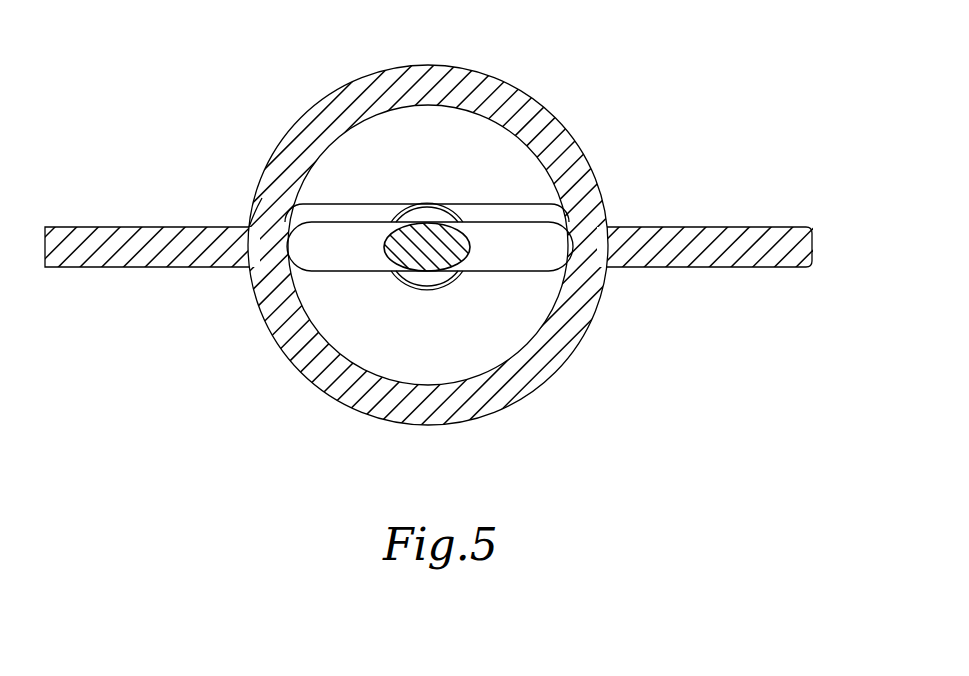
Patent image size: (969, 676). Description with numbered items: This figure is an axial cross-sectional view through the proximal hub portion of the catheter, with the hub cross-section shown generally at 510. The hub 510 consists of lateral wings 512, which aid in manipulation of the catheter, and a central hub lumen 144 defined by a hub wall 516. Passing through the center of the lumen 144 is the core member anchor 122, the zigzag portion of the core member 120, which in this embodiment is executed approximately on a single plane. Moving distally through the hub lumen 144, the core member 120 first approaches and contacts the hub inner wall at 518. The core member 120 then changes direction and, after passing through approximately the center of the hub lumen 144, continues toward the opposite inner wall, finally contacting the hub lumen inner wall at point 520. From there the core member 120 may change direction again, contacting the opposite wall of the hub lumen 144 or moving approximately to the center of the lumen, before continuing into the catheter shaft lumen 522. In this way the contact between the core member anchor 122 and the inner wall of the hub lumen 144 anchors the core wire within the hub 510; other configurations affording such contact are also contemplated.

The hub 510 is at (578, 105).
The lateral wings 512 is at (122, 267).
The hub wall 516 is at (578, 151).
The hub inner wall contact point 518 is at (603, 208).
The hub lumen inner wall contact point 520 is at (257, 208).
The catheter shaft lumen 522 is at (427, 282).
The hub lumen 144 is at (415, 137).
The core member 120 is at (333, 250).
The core member anchor 122 is at (443, 204).